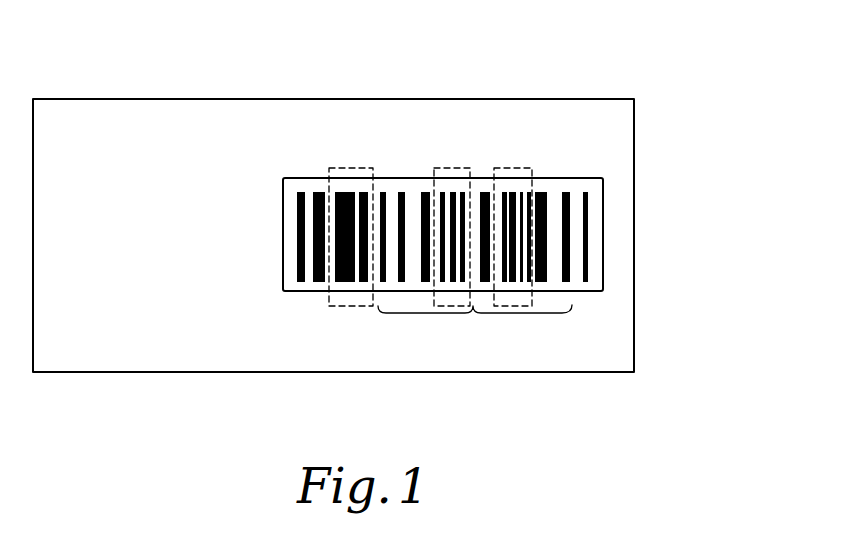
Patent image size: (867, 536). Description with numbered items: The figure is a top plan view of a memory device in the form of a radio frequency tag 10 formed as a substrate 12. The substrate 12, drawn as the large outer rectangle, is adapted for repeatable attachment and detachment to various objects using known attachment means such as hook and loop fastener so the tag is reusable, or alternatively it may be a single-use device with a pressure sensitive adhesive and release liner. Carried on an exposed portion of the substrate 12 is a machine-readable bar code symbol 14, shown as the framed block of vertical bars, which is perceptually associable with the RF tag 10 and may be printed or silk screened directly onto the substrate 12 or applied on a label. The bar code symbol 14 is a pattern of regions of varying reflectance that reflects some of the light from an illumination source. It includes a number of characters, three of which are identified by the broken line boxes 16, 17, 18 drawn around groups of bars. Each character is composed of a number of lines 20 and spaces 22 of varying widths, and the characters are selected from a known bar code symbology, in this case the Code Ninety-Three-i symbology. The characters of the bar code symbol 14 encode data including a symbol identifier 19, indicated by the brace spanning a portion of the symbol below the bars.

The RF tag 10 is at (666, 58).
The substrate 12 is at (635, 232).
The bar code symbol 14 is at (283, 307).
The broken line box 16 is at (343, 172).
The broken line box 17 is at (453, 172).
The broken line box 18 is at (513, 172).
The symbol identifier 19 is at (473, 313).
The line 20 is at (587, 283).
The space 22 is at (577, 192).